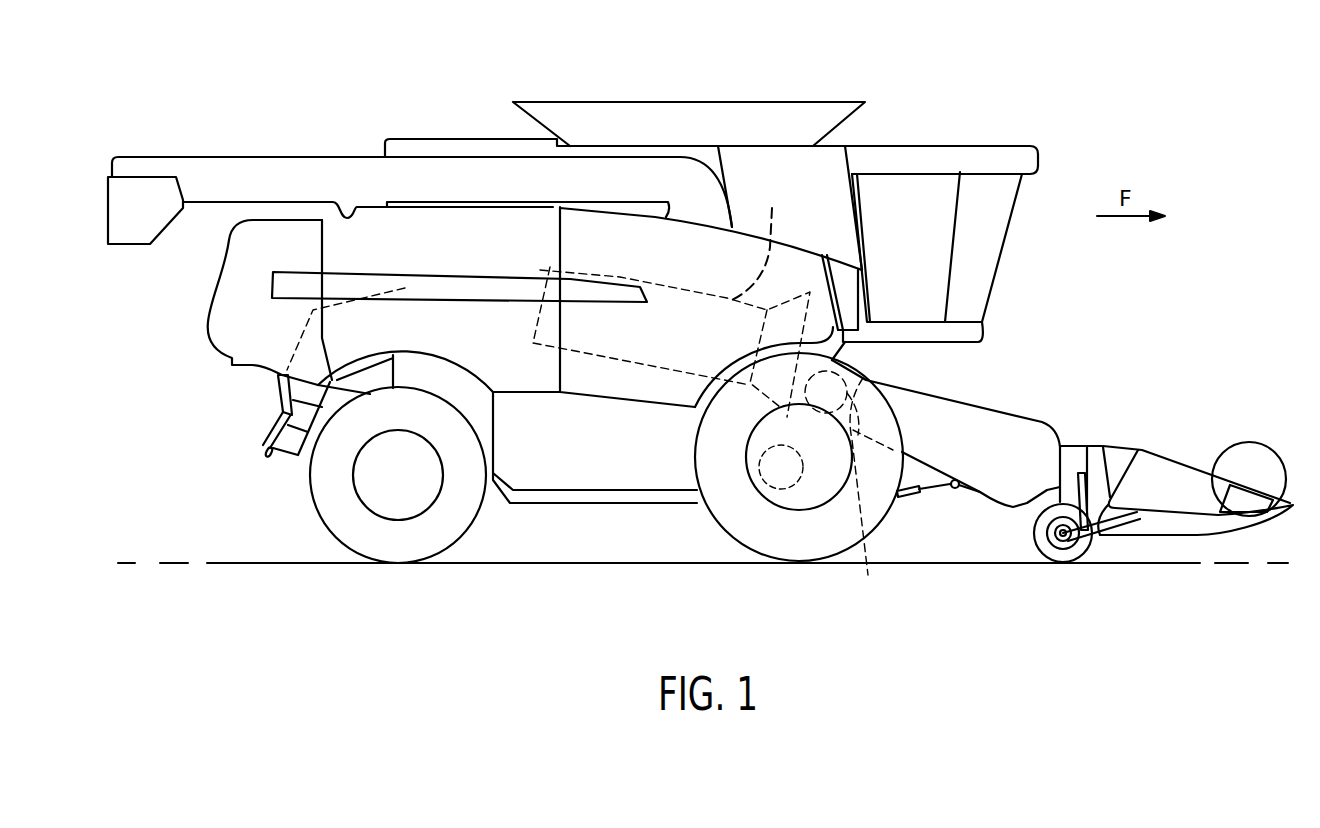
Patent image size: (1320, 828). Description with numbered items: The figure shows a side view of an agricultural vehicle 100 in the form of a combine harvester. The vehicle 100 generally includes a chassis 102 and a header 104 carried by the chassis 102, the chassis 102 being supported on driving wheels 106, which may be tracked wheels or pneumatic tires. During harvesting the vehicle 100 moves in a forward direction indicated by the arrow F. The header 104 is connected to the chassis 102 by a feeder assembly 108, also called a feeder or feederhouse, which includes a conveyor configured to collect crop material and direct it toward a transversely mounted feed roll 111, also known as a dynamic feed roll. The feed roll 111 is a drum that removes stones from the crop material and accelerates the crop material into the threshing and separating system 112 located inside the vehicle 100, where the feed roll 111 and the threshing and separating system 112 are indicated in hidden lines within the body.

The agricultural vehicle 100 is at (1033, 66).
The chassis 102 is at (582, 460).
The header 104 is at (1181, 433).
The driving wheels 106 is at (393, 542).
The feeder assembly 108 is at (957, 420).
The feed roll 111 is at (849, 491).
The threshing and separating system 112 is at (758, 241).